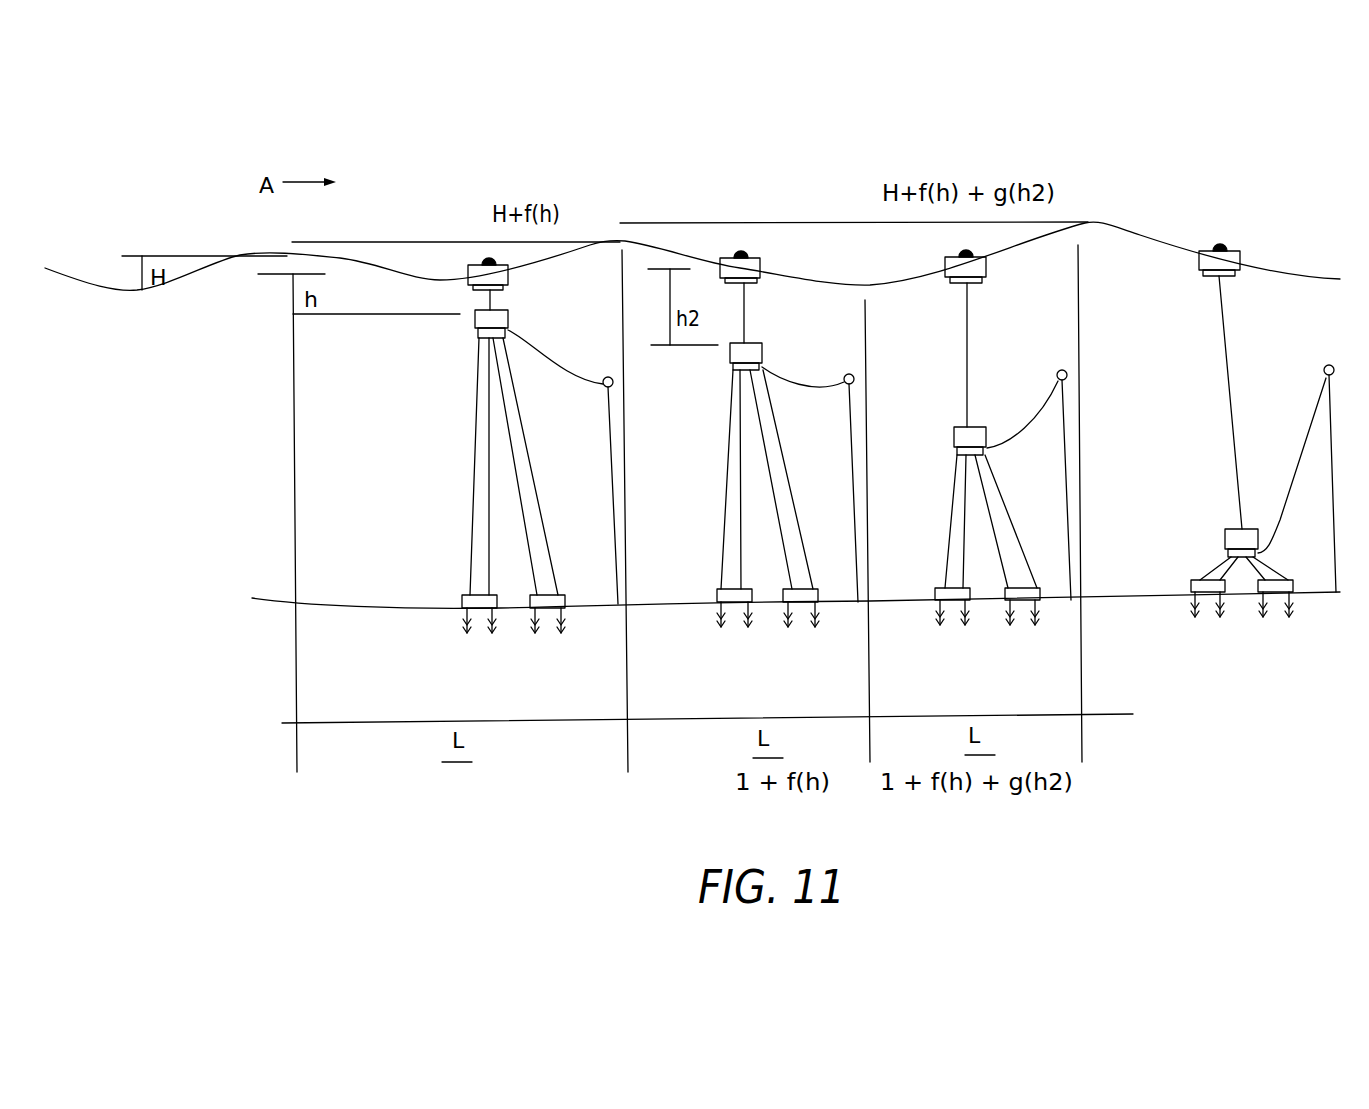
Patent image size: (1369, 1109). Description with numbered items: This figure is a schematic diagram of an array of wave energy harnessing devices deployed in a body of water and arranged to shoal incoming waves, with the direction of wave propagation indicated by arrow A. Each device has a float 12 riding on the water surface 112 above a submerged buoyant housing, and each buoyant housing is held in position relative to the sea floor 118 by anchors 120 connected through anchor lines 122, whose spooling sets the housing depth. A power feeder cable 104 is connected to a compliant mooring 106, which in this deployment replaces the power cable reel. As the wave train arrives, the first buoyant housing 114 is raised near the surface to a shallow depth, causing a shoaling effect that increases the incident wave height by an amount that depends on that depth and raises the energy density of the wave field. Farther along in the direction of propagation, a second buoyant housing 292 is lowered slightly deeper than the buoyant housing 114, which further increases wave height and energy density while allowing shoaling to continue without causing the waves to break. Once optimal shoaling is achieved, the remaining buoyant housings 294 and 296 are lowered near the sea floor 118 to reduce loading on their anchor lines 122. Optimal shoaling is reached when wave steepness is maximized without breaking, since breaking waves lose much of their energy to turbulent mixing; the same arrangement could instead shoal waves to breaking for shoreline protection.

The float 12 is at (468, 272).
The power feeder cable 104 is at (578, 372).
The compliant mooring 106 is at (608, 376).
The water surface 112 is at (356, 258).
The buoyant housing 114 is at (475, 325).
The sea floor 118 is at (326, 607).
The anchors 120 is at (560, 633).
The anchor lines 122 is at (488, 523).
The second buoyant housing 292 is at (755, 343).
The buoyant housing 294 is at (955, 427).
The buoyant housing 296 is at (1225, 529).